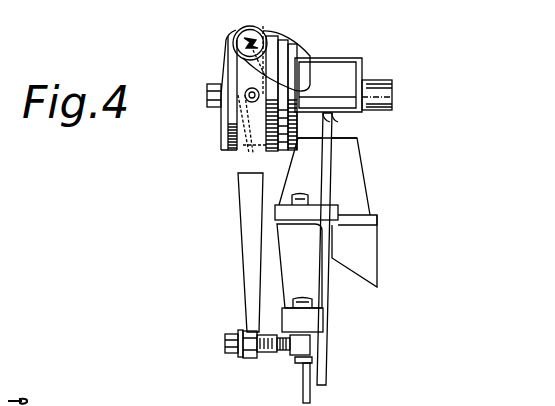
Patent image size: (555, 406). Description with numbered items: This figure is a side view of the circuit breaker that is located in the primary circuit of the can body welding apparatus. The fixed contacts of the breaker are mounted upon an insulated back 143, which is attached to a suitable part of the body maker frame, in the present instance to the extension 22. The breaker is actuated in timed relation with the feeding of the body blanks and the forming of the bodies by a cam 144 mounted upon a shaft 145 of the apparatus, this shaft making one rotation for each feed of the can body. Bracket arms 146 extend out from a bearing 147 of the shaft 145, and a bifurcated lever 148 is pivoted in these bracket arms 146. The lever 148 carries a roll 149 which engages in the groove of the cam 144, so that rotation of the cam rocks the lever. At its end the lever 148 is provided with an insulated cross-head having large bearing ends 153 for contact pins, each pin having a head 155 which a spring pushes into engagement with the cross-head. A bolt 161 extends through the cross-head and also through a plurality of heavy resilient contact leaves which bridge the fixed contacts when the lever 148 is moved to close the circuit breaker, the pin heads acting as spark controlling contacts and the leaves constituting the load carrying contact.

The extension 22 is at (324, 323).
The insulated back 143 is at (312, 348).
The cam 144 is at (225, 141).
The shaft 145 is at (380, 88).
The bracket arms 146 is at (278, 62).
The bearing 147 is at (345, 180).
The bifurcated lever 148 is at (252, 237).
The roll 149 is at (245, 89).
The bearing ends 153 is at (256, 358).
The pin head 155 is at (247, 351).
The bolt 161 is at (226, 345).